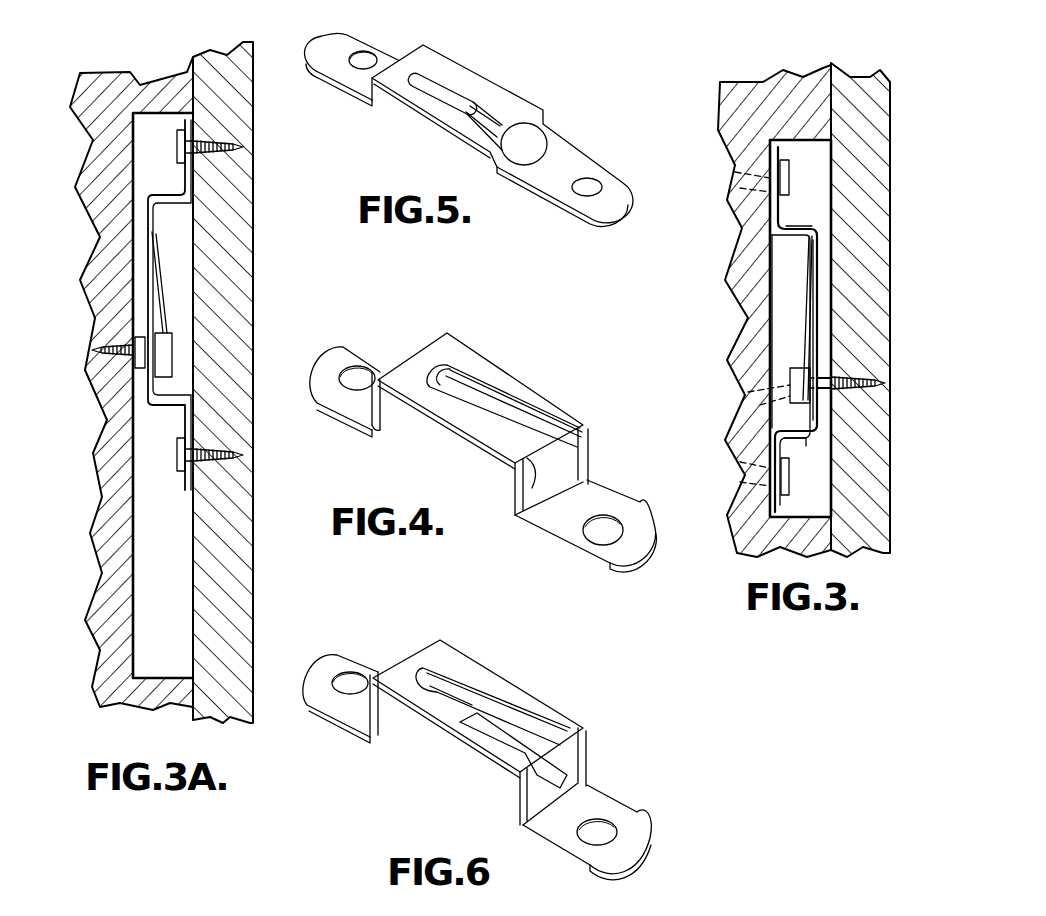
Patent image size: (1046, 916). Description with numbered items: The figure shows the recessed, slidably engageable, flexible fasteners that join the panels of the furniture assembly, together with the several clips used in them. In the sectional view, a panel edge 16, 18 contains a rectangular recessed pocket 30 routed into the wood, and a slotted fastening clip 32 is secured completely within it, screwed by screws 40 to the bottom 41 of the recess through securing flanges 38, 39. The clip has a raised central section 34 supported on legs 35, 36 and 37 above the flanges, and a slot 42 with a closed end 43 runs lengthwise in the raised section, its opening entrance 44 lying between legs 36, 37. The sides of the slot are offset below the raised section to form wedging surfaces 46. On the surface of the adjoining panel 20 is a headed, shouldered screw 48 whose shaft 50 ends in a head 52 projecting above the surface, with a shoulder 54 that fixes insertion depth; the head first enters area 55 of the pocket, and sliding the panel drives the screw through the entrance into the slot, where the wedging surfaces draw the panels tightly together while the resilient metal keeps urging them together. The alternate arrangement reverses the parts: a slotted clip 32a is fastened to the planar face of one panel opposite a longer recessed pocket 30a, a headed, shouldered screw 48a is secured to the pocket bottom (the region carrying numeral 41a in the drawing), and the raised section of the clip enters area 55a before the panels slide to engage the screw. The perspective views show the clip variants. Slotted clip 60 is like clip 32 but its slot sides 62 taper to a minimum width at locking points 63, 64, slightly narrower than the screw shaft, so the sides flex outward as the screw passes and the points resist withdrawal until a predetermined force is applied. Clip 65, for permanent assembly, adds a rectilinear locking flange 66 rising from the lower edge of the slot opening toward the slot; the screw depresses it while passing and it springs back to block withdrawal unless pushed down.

In FIG. 3A, the panel edge 16 is at (113, 383).
In FIG. 3, the panel edge 16 is at (751, 311).
In FIG. 3A, the panel edge 18 is at (97, 268).
In FIG. 3, the panel edge 18 is at (745, 505).
In FIG. 3A, the panel 20 is at (231, 286).
In FIG. 3, the panel 20 is at (880, 462).
In FIG. 3, the recessed pocket 30 is at (815, 325).
In FIG. 3A, the recessed pocket 30a is at (176, 341).
In FIG. 3, the slotted fastening clip 32 is at (830, 224).
In FIG. 4, the slotted fastening clip 32 is at (483, 444).
In FIG. 3A, the slotted clip 32a is at (165, 233).
In FIG. 3, the raised central section 34 is at (815, 258).
In FIG. 4, the raised central section 34 is at (487, 365).
In FIG. 3, the leg 35 is at (805, 446).
In FIG. 4, the leg 35 is at (383, 431).
In FIG. 3, the leg 36 is at (862, 187).
In FIG. 4, the leg 36 is at (522, 482).
In FIG. 3, the leg 37 is at (830, 222).
In FIG. 4, the leg 37 is at (588, 435).
In FIG. 3, the securing flange 38 is at (781, 502).
In FIG. 4, the securing flange 38 is at (368, 352).
In FIG. 3, the securing flange 39 is at (782, 156).
In FIG. 4, the securing flange 39 is at (570, 537).
In FIG. 3, the screw 40 is at (735, 175).
In FIG. 3, the bottom of recess 41 is at (777, 280).
In FIG. 3A, the spring tongue (alternate) 41a is at (137, 460).
In FIG. 4, the slot 42 is at (503, 402).
In FIG. 4, the closed end 43 is at (438, 365).
In FIG. 4, the opening entrance 44 is at (518, 518).
In FIG. 3, the wedging surface 46 is at (800, 345).
In FIG. 4, the wedging surface 46 is at (450, 382).
In FIG. 3, the headed, shouldered screw 48 is at (868, 385).
In FIG. 3A, the headed, shouldered screw 48a is at (102, 376).
In FIG. 3, the shaft 50 is at (748, 405).
In FIG. 3, the head 52 is at (795, 380).
In FIG. 3, the shoulder 54 is at (832, 388).
In FIG. 3, the area of pocket 55 is at (825, 167).
In FIG. 3A, the area of pocket 55a is at (140, 602).
In FIG. 5, the slotted clip 60 is at (462, 64).
In FIG. 5, the slot side 62 is at (497, 103).
In FIG. 5, the locking point 63 is at (457, 104).
In FIG. 5, the locking point 64 is at (470, 118).
In FIG. 6, the clip 65 is at (437, 752).
In FIG. 6, the rectilinear locking flange 66 is at (548, 770).